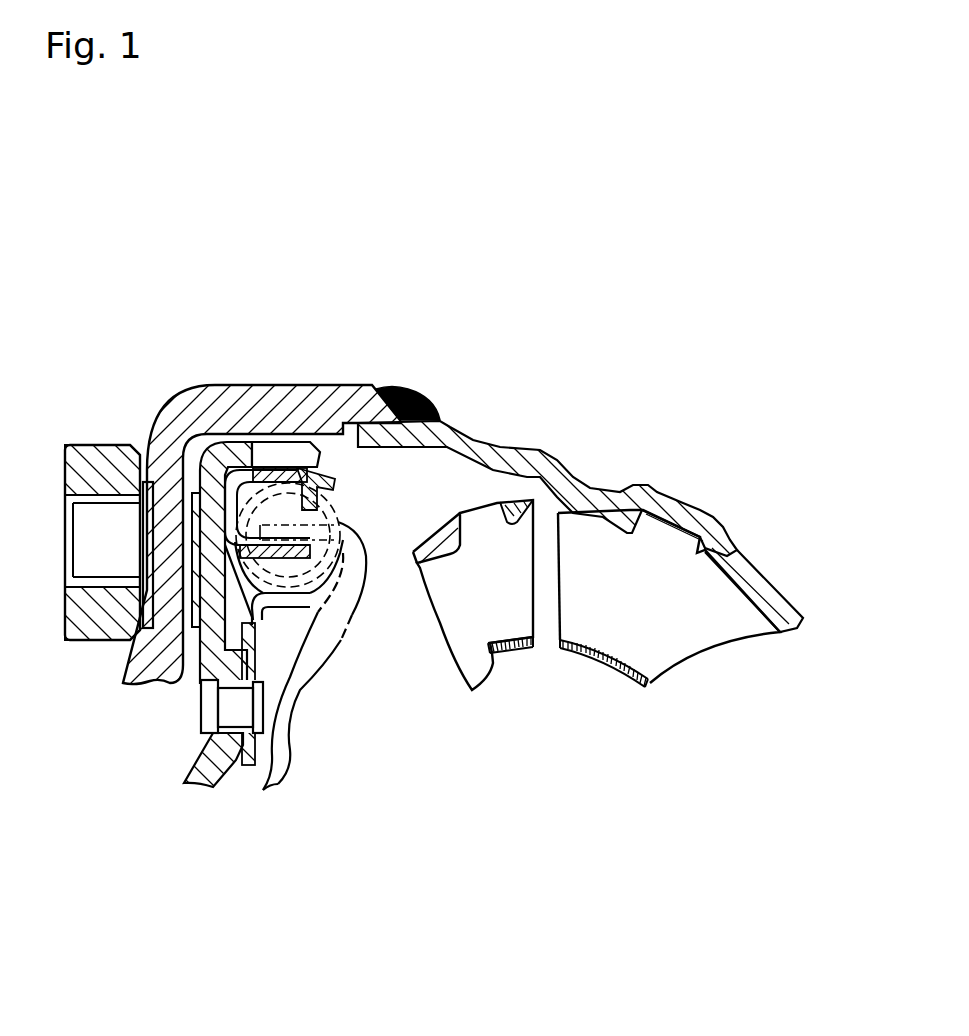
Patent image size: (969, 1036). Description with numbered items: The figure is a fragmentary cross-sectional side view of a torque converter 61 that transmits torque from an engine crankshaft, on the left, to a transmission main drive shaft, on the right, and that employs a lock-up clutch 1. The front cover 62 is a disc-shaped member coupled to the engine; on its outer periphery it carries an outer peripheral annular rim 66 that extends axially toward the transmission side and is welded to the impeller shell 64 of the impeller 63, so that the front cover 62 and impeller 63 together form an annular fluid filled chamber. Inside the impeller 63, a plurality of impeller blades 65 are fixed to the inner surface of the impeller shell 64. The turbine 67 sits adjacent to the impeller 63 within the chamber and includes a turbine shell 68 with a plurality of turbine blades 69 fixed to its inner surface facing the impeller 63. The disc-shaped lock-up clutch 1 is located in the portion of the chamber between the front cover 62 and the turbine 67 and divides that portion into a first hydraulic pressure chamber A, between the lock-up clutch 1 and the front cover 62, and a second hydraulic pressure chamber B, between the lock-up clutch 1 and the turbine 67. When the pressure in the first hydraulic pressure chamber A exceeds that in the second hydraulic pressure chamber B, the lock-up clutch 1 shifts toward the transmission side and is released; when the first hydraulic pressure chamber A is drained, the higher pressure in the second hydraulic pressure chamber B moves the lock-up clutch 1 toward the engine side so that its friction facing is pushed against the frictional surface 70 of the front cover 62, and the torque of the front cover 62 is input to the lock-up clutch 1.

The lock-up clutch 1 is at (347, 510).
The torque converter 61 is at (422, 340).
The front cover 62 is at (146, 628).
The impeller 63 is at (658, 466).
The impeller shell 64 is at (743, 567).
The impeller blades 65 is at (670, 620).
The outer peripheral annular rim 66 is at (243, 400).
The turbine 67 is at (493, 708).
The turbine shell 68 is at (440, 540).
The turbine blades 69 is at (502, 593).
The frictional surface 70 is at (188, 525).
The first hydraulic pressure chamber A is at (187, 680).
The second hydraulic pressure chamber B is at (317, 680).